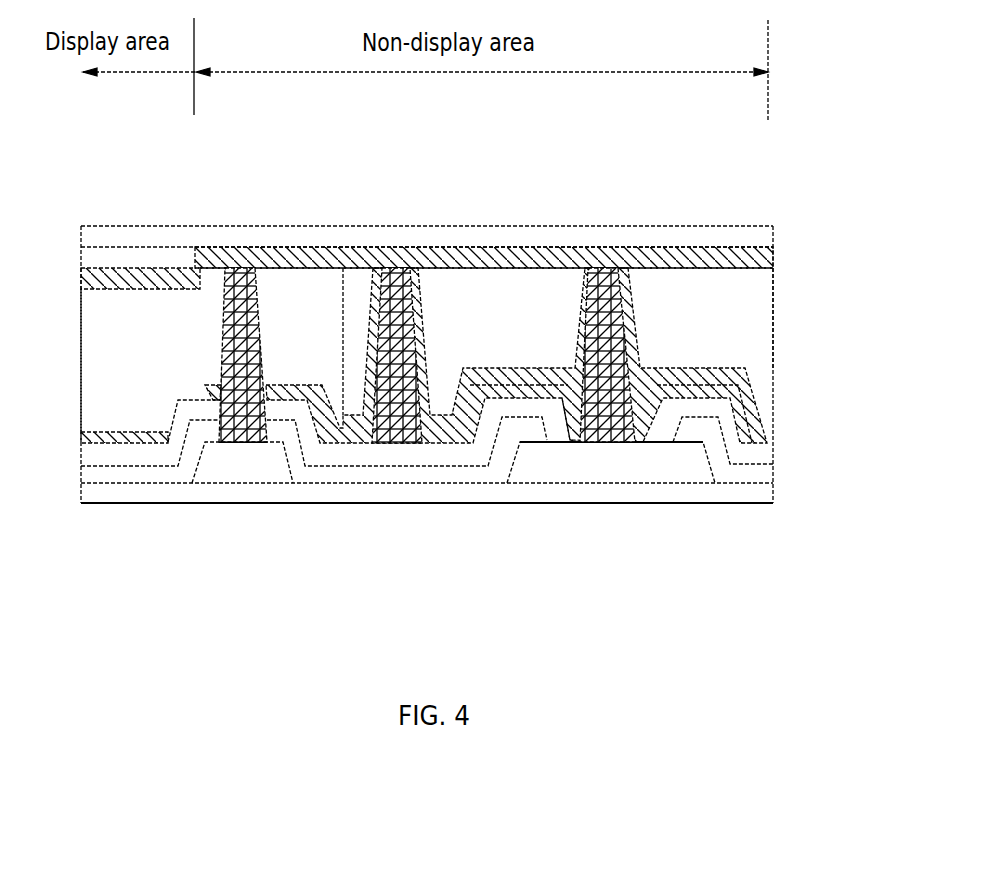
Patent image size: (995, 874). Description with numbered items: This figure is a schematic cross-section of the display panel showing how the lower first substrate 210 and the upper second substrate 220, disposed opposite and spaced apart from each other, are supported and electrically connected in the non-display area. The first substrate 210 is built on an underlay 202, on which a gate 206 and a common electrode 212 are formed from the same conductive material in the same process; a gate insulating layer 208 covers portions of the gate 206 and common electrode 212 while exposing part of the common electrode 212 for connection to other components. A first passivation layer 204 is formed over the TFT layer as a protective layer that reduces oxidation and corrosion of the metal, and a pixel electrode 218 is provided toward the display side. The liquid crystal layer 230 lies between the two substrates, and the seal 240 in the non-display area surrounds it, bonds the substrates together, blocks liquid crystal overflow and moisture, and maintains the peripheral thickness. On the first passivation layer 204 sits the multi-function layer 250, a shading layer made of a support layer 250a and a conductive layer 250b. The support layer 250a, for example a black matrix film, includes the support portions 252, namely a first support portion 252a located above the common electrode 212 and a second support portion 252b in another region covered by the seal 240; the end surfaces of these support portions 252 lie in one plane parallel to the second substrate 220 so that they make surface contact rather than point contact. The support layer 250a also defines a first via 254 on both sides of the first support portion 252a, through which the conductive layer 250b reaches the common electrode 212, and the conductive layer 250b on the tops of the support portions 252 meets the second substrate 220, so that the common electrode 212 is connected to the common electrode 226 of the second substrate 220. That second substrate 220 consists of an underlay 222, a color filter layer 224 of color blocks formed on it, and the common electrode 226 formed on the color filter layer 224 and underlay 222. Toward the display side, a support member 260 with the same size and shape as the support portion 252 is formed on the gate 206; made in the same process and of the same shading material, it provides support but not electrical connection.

The underlay 202 is at (222, 493).
The first passivation layer 204 is at (397, 453).
The gate 206 is at (258, 468).
The gate insulating layer 208 is at (333, 470).
The first substrate 210 is at (427, 514).
The common electrode 212 is at (606, 493).
The pixel electrode 218 is at (113, 442).
The second substrate 220 is at (427, 201).
The underlay 222 is at (178, 232).
The color filter layer 224 is at (140, 236).
The common electrode 226 is at (292, 258).
The liquid crystal layer 230 is at (125, 348).
The seal 240 is at (743, 327).
The multi-function layer 250 is at (563, 355).
The support layer 250a is at (768, 412).
The conductive layer 250b is at (750, 377).
The support portion 252 is at (557, 310).
The first support portion 252a is at (607, 268).
The second support portion 252b is at (398, 268).
The first via 254 is at (577, 442).
The support member 260 is at (240, 350).